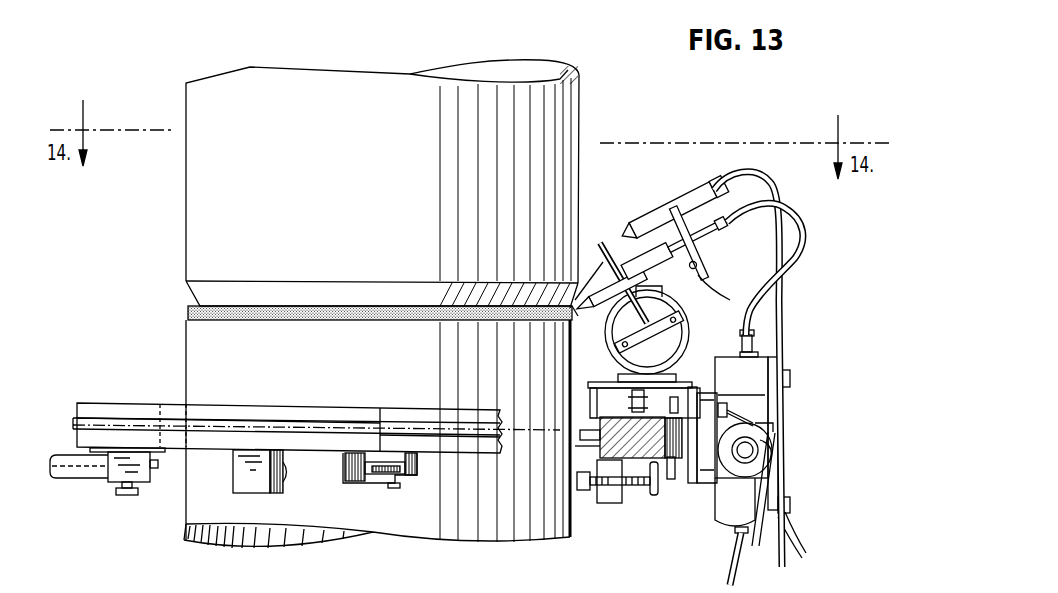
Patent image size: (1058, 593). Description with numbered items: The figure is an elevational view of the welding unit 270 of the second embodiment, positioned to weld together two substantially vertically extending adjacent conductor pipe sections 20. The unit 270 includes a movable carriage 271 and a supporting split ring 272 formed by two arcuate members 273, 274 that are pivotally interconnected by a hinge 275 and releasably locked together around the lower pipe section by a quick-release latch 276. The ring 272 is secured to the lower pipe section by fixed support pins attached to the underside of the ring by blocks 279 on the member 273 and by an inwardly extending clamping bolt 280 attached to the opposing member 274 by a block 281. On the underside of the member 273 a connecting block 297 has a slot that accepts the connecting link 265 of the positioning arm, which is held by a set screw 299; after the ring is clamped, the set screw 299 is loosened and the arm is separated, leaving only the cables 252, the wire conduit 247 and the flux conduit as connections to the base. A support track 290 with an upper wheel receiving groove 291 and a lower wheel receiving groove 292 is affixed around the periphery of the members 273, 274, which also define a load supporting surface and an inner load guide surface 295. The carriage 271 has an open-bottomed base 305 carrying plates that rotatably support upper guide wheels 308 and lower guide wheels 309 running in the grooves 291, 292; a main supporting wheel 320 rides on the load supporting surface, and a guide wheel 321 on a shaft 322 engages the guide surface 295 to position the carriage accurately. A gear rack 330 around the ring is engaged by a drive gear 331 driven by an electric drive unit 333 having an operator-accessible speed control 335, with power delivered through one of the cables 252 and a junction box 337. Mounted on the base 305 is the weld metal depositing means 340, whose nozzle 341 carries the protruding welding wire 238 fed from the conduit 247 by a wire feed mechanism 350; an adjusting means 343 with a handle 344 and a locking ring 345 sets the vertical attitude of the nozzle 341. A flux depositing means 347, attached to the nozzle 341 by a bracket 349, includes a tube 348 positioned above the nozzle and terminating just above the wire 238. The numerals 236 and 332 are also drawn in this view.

The conductor pipe section 20 is at (400, 163).
The conduit 236 is at (760, 540).
The welding wire 238 is at (575, 330).
The wire conduit 247 is at (805, 240).
The control and power supply cables 252 is at (698, 266).
The connecting link 265 is at (72, 466).
The welding unit 270 is at (683, 364).
The carriage 271 is at (693, 358).
The split ring 272 is at (455, 432).
The arcuate member 273 is at (315, 440).
The arcuate member 274 is at (448, 440).
The hinge 275 is at (392, 488).
The quick-release latch 276 is at (396, 589).
The block 279 is at (252, 480).
The clamping bolt 280 is at (628, 492).
The block 281 is at (606, 492).
The support track 290 is at (654, 494).
The upper wheel receiving groove 291 is at (675, 415).
The lower wheel receiving groove 292 is at (672, 480).
The load guide surface 295 is at (600, 445).
The connecting block 297 is at (138, 470).
The set screw 299 is at (122, 496).
The base 305 is at (592, 385).
The upper guide wheel 308 is at (762, 431).
The lower guide wheel 309 is at (692, 484).
The main supporting wheel 320 is at (632, 400).
The guide wheel 321 is at (580, 434).
The shaft 322 is at (597, 403).
The gear rack 330 is at (332, 420).
The drive gear 331 is at (735, 505).
The cover 332 is at (757, 395).
The electric drive unit 333 is at (760, 457).
The speed control 335 is at (748, 453).
The junction box 337 is at (773, 425).
The weld metal depositing means 340 is at (655, 272).
The nozzle 341 is at (592, 306).
The nozzle attitude adjusting means 343 is at (703, 272).
The handle 344 is at (598, 242).
The locking ring 345 is at (684, 320).
The flux depositing means 347 is at (688, 200).
The flux tube 348 is at (580, 280).
The bracket 349 is at (695, 236).
The wire feed mechanism 350 is at (770, 366).